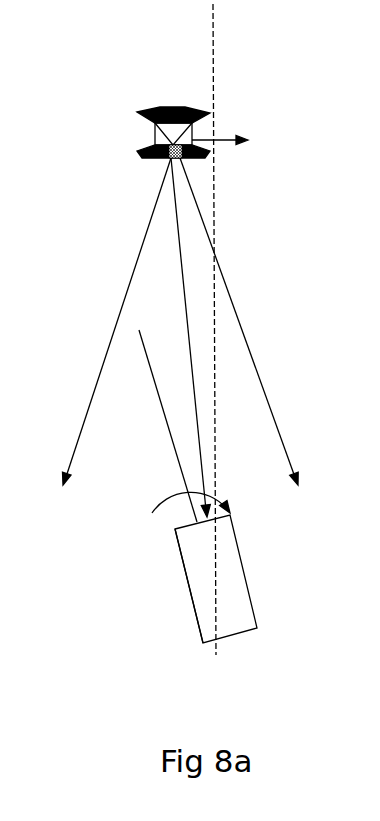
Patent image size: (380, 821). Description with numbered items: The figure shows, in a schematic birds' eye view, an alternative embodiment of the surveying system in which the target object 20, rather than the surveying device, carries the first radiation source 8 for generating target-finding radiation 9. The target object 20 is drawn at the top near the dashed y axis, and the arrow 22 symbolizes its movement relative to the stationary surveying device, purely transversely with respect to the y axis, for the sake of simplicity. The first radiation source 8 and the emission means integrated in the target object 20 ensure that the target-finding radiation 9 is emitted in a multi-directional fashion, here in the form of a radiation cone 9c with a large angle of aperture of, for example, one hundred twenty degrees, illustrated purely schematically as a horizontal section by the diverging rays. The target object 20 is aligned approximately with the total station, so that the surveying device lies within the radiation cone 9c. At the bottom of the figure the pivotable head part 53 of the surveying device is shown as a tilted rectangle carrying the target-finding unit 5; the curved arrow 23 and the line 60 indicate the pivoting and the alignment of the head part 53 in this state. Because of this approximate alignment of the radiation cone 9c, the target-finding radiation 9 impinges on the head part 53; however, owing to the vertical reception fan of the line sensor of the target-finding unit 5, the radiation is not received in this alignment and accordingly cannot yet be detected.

The first radiation source 8 is at (156, 142).
The target object 20 is at (192, 123).
The arrow 22 is at (217, 142).
The target-finding radiation 9 is at (98, 370).
The radiation cone 9c is at (197, 237).
The surface normal line 60 is at (158, 398).
The rotation direction arrow 23 is at (231, 513).
The target-finding unit 5 is at (186, 535).
The head part 53 is at (207, 573).
The y axis y is at (213, 48).